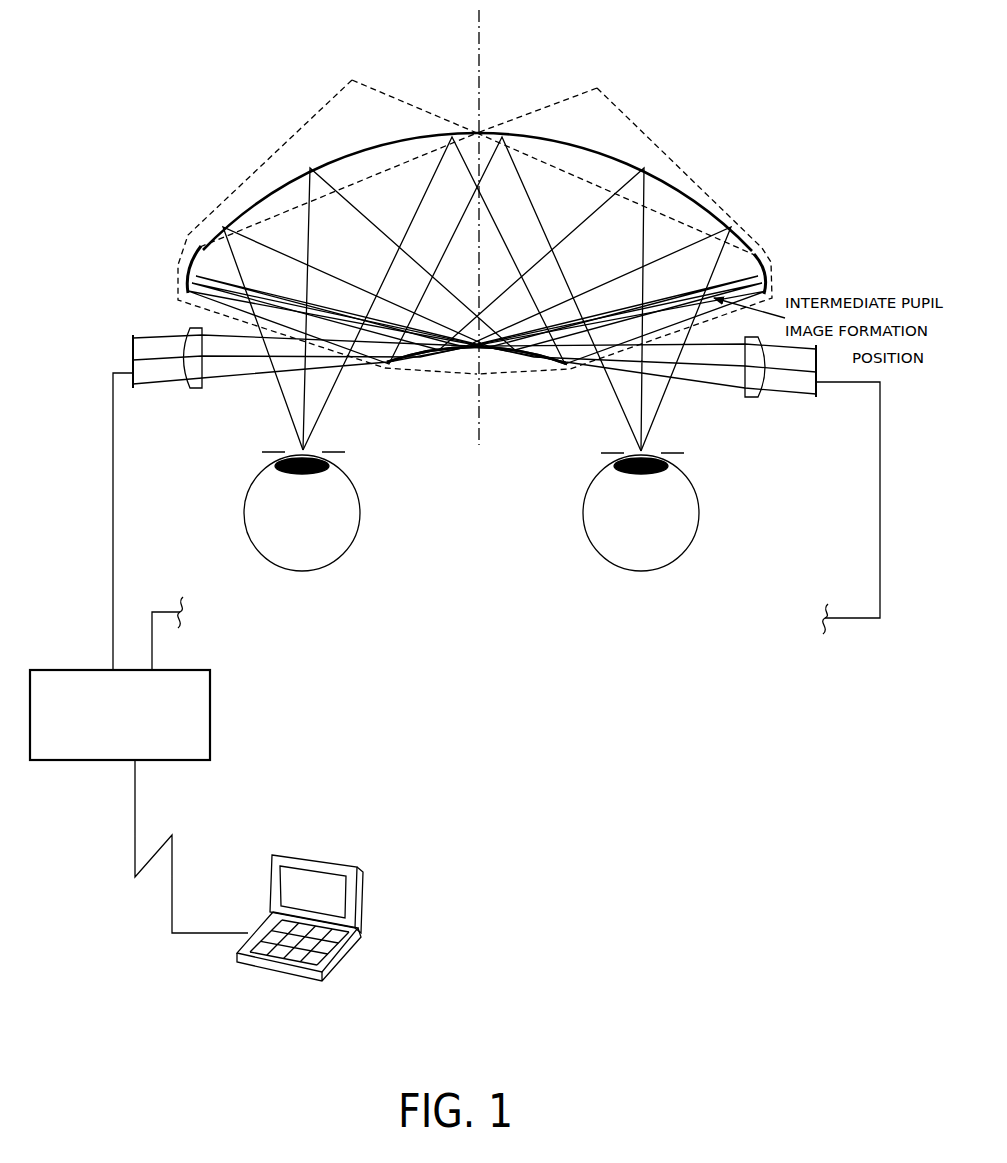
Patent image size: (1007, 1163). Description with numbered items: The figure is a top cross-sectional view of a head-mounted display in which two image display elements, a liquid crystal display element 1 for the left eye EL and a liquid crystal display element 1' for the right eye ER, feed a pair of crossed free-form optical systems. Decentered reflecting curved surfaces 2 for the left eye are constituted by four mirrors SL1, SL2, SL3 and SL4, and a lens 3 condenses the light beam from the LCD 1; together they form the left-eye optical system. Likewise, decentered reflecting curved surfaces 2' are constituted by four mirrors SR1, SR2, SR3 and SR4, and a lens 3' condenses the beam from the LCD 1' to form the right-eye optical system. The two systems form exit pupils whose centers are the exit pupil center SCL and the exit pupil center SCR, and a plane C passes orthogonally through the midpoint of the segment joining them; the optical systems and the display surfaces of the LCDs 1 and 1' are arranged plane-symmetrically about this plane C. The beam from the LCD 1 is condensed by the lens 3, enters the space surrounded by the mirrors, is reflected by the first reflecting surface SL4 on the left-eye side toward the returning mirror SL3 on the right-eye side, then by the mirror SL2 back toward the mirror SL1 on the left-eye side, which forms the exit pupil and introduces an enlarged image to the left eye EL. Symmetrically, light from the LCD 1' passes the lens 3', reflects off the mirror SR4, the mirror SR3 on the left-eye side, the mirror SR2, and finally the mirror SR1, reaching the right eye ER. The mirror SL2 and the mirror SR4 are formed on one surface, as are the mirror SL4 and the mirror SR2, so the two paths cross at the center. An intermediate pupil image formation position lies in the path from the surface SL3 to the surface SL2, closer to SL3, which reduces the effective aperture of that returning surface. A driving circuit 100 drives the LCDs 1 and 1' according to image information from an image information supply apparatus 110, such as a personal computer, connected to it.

The liquid crystal display element 1 is at (107, 363).
The liquid crystal display element 1' is at (842, 395).
The decentered reflecting curved surfaces 2 is at (327, 216).
The decentered reflecting curved surfaces 2' is at (624, 219).
The lens 3 is at (182, 387).
The lens 3' is at (774, 391).
The driving circuit 100 is at (212, 695).
The image information supply apparatus 110 is at (322, 858).
The mirror SL1 is at (349, 143).
The mirror SL2 is at (513, 359).
The mirror SL3 is at (761, 274).
The mirror SL4 is at (436, 358).
The mirror SR1 is at (621, 161).
The mirror SR2 is at (448, 359).
The mirror SR3 is at (184, 263).
The mirror SR4 is at (540, 365).
The exit pupil center SCL is at (308, 448).
The exit pupil center SCR is at (645, 449).
The left eye EL is at (298, 492).
The right eye ER is at (636, 494).
The plane of symmetry C is at (478, 222).